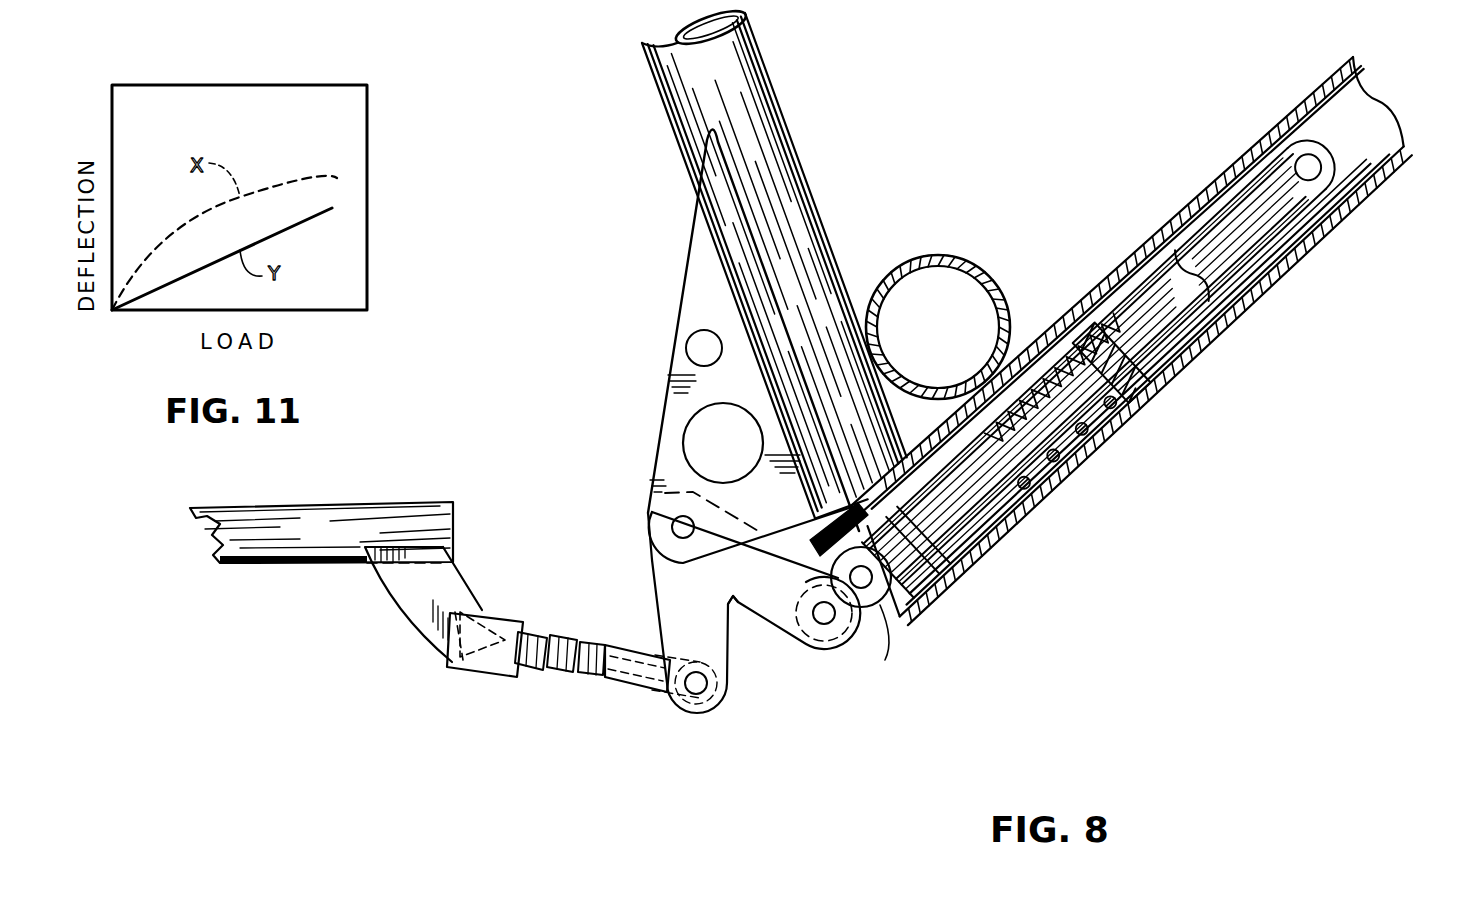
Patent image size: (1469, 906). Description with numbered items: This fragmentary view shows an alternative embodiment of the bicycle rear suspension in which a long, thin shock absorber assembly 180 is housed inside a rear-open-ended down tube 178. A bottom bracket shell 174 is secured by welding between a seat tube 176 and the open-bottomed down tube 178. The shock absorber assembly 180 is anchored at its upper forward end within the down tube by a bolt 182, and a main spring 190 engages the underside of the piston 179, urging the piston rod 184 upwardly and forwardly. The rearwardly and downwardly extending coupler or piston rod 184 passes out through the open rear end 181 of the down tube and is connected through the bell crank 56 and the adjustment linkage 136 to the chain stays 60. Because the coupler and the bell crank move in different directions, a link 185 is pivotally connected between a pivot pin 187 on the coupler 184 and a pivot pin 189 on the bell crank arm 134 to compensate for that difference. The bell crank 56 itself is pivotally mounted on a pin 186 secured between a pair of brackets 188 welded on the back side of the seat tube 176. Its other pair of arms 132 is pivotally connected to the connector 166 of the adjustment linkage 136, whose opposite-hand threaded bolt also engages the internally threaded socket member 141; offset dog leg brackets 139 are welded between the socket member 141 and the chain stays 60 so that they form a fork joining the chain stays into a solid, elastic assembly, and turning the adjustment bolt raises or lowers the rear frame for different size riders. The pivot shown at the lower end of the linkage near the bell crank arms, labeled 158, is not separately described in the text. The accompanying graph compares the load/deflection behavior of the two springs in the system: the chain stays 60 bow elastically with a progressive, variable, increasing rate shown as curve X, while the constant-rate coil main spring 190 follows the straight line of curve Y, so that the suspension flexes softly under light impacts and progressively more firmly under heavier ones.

The bell crank 56 is at (738, 612).
The chain stays 60 is at (328, 546).
The bell crank arms 132 is at (710, 614).
The bell crank arm 134 is at (792, 581).
The adjustment bolt linkage 136 is at (575, 691).
The offset brackets 139 is at (440, 612).
The socket member 141 is at (478, 672).
The pivot pin 158 is at (700, 694).
The adjustment link connector 166 is at (628, 672).
The bottom bracket shell 174 is at (976, 256).
The seat tube 176 is at (745, 120).
The down tube 178 is at (1296, 100).
The piston 179 is at (1170, 378).
The shock absorber assembly 180 is at (1143, 412).
The open rear end 181 is at (883, 612).
The bolt 182 is at (1392, 132).
The piston rod 184 is at (1075, 414).
The link 185 is at (861, 600).
The pin 186 is at (672, 527).
The pivot pin 187 is at (846, 529).
The brackets 188 is at (712, 287).
The pivot pin 189 is at (822, 630).
The main spring 190 is at (1080, 482).